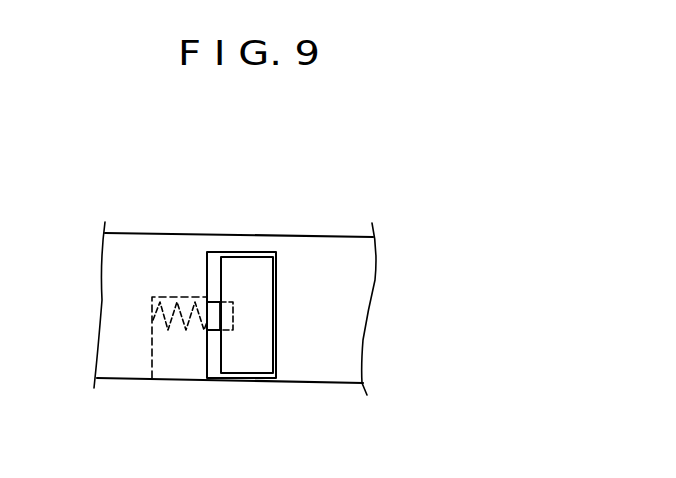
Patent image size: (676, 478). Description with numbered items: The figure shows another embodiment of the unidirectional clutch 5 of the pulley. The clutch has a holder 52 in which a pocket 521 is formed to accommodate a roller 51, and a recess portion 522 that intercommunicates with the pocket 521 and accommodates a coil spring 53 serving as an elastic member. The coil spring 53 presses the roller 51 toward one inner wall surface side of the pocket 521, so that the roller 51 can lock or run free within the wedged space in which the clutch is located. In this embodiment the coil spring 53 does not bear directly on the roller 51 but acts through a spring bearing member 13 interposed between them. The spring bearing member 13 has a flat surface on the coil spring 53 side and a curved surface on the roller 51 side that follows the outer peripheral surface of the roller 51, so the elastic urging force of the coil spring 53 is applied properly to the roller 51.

The unidirectional clutch 5 is at (275, 347).
The spring bearing member 13 is at (215, 301).
The roller 51 is at (247, 268).
The holder 52 is at (355, 315).
The coil spring 53 is at (172, 325).
The pocket 521 is at (273, 335).
The recess portion 522 is at (160, 383).